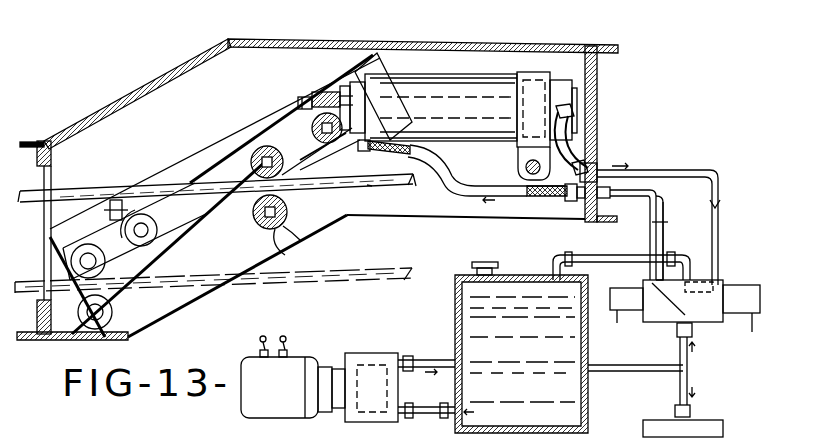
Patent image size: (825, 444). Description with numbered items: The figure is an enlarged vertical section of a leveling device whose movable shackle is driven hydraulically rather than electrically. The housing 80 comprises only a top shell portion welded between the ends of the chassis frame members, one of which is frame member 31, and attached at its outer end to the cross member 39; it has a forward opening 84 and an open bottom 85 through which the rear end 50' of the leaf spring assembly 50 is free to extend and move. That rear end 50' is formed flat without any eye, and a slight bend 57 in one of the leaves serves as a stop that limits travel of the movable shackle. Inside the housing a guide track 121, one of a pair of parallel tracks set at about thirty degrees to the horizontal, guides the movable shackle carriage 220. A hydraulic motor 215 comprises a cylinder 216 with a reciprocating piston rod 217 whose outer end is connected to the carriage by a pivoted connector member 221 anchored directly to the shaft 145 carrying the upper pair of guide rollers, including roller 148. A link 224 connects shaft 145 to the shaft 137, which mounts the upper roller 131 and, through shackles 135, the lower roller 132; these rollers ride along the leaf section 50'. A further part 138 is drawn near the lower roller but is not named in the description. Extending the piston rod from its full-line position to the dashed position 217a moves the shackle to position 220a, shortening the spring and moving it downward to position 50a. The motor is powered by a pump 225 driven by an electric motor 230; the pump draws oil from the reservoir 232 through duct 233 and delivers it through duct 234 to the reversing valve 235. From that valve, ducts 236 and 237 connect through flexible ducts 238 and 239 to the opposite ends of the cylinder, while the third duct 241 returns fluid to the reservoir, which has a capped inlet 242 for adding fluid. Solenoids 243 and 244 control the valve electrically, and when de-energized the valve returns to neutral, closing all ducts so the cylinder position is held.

The housing 80 is at (331, 43).
The cross member 39 is at (612, 47).
The chassis frame member 31 is at (32, 140).
The forward opening 84 is at (52, 171).
The open bottom 85 is at (192, 297).
The guide track 121 is at (193, 218).
The upper roller 131 is at (266, 146).
The movable shackle carriage 220 is at (288, 121).
The moved position of movable shackle 220a is at (97, 240).
The extended position of piston rod 217a is at (166, 221).
The leaf spring assembly 50 is at (206, 202).
The lowered position of leaf spring 50a is at (24, 258).
The shaft 137 is at (250, 160).
The shackles 135 is at (287, 199).
The link 224 is at (265, 143).
The pivoted connector member 221 is at (336, 92).
The guide roller 148 is at (329, 149).
The shaft 145 is at (347, 150).
The lower roller 132 is at (290, 223).
The link 138 is at (283, 229).
The hydraulic motor 215 is at (468, 64).
The cylinder 216 is at (450, 73).
The piston rod 217 is at (493, 80).
The flexible duct 238 is at (463, 163).
The duct 236 is at (667, 230).
The flexible duct 239 is at (567, 155).
The duct 237 is at (721, 206).
The reversing valve 235 is at (728, 284).
The solenoid 243 is at (636, 290).
The solenoid 244 is at (744, 294).
The duct 234 is at (430, 359).
The return duct 241 is at (582, 255).
The reservoir 232 is at (588, 394).
The capped inlet 242 is at (502, 250).
The duct 233 is at (418, 415).
The electric motor 230 is at (305, 357).
The pump 225 is at (358, 355).
The rear end of leaf spring assembly 50' is at (378, 201).
The bend 57 is at (417, 185).